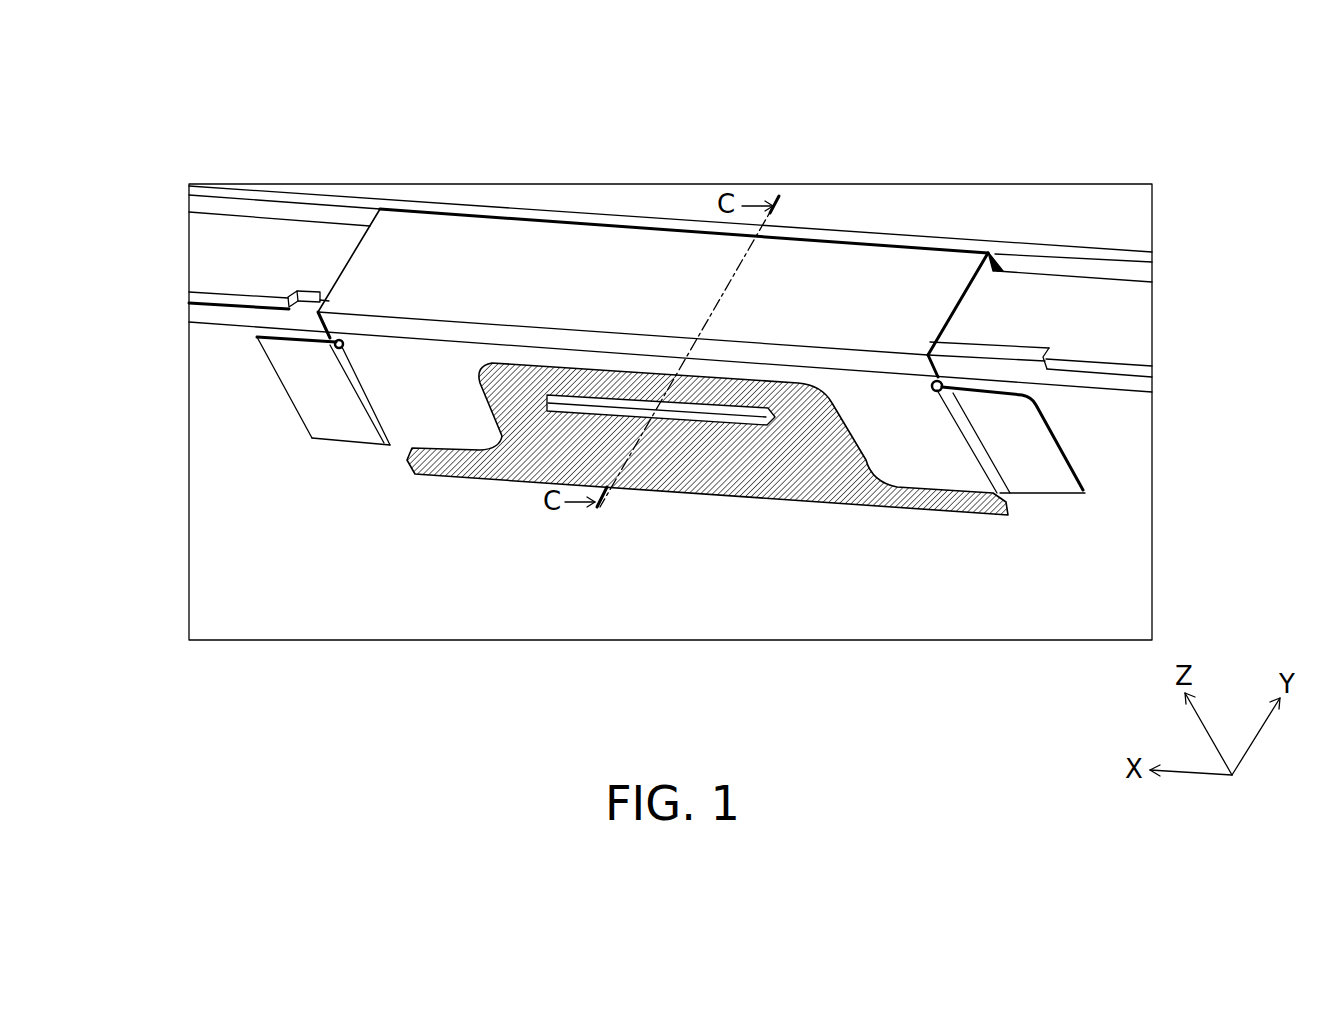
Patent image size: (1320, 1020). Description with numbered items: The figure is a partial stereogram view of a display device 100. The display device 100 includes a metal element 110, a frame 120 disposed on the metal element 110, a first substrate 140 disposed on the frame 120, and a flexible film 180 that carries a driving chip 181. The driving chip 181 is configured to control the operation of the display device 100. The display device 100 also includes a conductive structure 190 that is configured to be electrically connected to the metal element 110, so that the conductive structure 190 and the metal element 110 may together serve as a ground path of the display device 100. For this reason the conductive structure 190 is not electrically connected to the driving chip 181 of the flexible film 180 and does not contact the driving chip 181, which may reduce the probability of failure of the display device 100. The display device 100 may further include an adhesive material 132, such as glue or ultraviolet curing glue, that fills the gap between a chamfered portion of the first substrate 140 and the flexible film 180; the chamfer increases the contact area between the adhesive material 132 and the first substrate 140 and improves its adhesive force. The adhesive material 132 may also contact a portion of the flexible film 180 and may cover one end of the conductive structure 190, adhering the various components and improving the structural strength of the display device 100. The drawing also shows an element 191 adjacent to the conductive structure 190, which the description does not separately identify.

The display device 100 is at (150, 81).
The metal element 110 is at (1125, 447).
The frame 120 is at (1123, 322).
The adhesive material 132 is at (1014, 250).
The first substrate 140 is at (1088, 265).
The flexible film 180 is at (807, 477).
The driving chip 181 is at (690, 417).
The conductive structure 190 is at (596, 250).
The bent flap 191 is at (1038, 460).